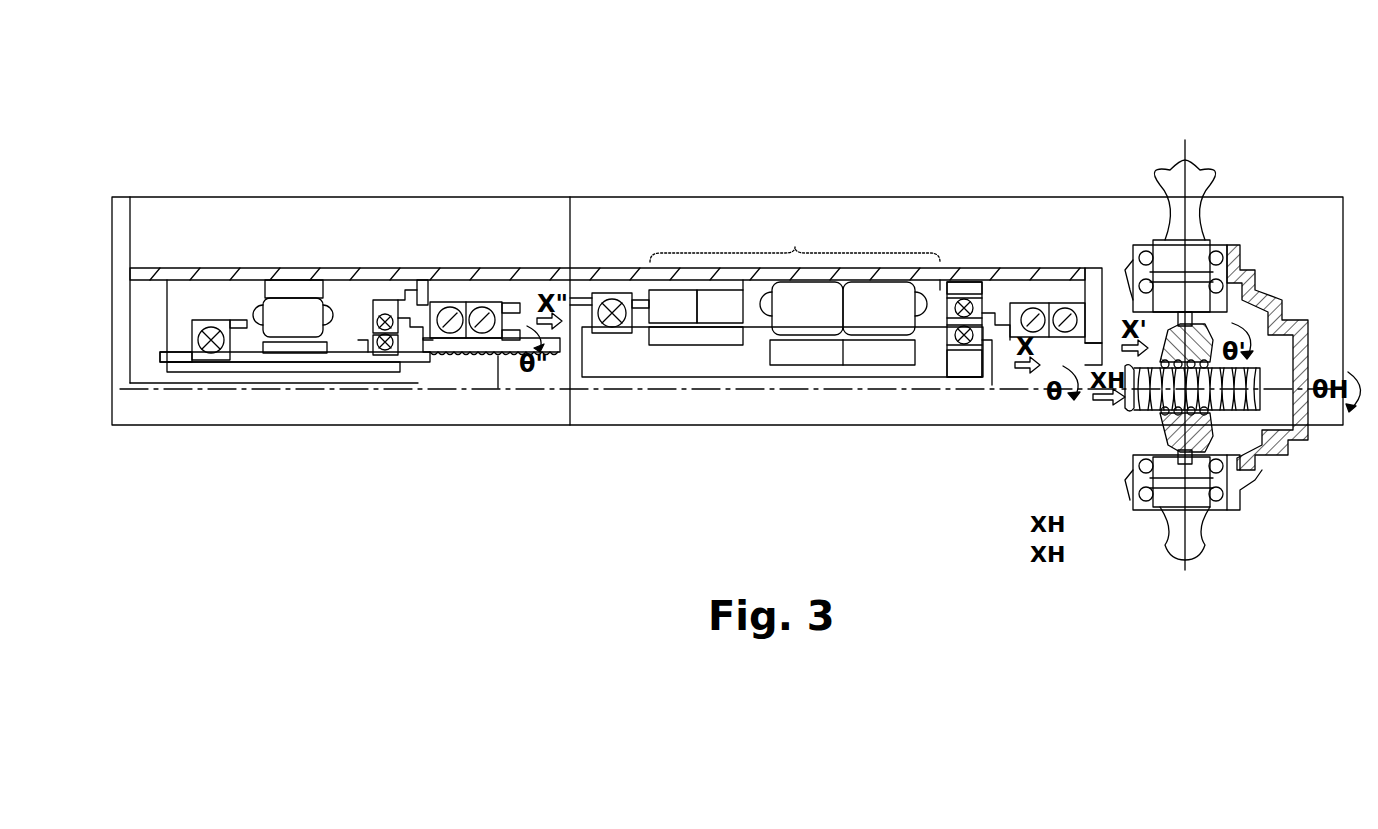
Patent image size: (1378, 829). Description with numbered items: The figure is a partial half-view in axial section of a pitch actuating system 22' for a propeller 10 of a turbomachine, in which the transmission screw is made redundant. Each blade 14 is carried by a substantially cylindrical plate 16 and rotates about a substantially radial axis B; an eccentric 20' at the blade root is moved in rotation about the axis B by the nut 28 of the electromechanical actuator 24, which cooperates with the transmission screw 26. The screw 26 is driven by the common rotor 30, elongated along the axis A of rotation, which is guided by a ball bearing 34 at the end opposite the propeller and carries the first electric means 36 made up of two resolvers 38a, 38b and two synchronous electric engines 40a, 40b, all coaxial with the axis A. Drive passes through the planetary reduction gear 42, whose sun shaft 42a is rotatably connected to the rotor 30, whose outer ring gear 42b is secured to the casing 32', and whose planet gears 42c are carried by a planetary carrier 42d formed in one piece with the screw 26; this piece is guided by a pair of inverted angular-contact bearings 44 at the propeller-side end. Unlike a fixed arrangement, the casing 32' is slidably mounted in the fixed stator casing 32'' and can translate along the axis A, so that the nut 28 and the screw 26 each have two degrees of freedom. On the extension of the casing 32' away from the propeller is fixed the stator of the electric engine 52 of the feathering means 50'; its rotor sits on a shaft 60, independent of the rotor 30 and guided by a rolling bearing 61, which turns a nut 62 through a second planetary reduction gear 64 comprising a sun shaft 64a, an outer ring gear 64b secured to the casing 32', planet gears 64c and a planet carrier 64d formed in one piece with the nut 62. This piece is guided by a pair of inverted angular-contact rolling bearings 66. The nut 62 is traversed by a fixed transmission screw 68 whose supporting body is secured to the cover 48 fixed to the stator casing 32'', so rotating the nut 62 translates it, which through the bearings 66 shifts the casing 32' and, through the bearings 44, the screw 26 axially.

The propeller 10 is at (1308, 140).
The blade 14 is at (1138, 240).
The plate 16 is at (1205, 253).
The eccentric 20' is at (1283, 377).
The pitch actuating system 22' is at (910, 113).
The electromechanical actuator 24 is at (682, 230).
The transmission screw 26 is at (1172, 426).
The nut 28 is at (1165, 455).
The rotor 30 is at (670, 356).
The casing 32' is at (959, 228).
The stator casing 32'' is at (770, 223).
The bearing 34 is at (605, 299).
The first electric means 36 is at (795, 239).
The resolver 38a is at (672, 306).
The resolver 38b is at (725, 306).
The electric engine 40a is at (818, 311).
The electric engine 40b is at (870, 308).
The reduction gear 42 is at (1000, 294).
The sun shaft 42a is at (960, 358).
The outer ring gear 42b is at (967, 292).
The planet gears 42c is at (944, 318).
The planetary carrier 42d is at (995, 332).
The bearings 44 is at (1037, 311).
The cover 48 is at (112, 325).
The feathering means 50' is at (295, 234).
The electric engine 52 is at (287, 312).
The shaft 60 is at (218, 358).
The rolling bearing 61 is at (202, 322).
The nut 62 is at (433, 350).
The reduction gear 64 is at (430, 292).
The sun shaft 64a is at (357, 342).
The outer ring gear 64b is at (385, 305).
The planet gears 64c is at (380, 358).
The planet carrier 64d is at (402, 317).
The rolling bearings 66 is at (483, 308).
The transmission screw 68 is at (513, 378).
The axis of rotation A is at (1023, 392).
The blade axis B is at (1186, 160).